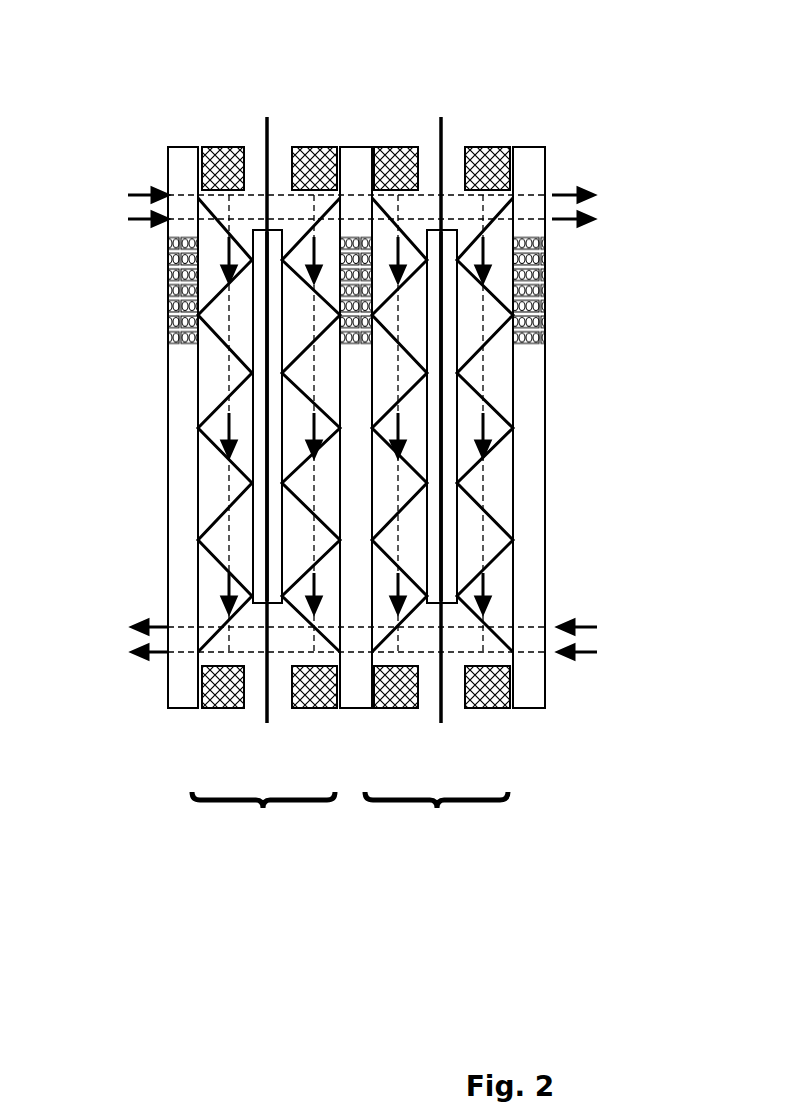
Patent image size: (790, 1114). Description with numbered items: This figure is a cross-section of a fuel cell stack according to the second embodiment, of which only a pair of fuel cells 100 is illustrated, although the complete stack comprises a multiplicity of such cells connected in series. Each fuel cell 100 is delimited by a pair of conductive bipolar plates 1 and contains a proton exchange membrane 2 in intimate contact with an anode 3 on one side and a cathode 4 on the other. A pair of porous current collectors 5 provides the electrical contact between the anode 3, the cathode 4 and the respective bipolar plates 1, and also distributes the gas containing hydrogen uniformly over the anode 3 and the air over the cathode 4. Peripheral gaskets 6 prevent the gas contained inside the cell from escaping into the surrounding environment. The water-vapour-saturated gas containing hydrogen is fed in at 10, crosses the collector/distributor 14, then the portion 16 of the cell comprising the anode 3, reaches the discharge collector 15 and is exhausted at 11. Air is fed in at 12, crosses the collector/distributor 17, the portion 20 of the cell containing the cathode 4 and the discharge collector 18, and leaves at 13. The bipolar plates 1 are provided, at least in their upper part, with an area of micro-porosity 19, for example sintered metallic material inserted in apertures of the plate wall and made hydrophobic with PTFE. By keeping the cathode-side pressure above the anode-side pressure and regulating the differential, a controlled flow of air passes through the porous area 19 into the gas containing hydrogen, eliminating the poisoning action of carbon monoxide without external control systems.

The bipolar plates 1 is at (187, 152).
The proton exchange membrane 2 is at (272, 127).
The anode 3 is at (257, 561).
The cathode 4 is at (275, 409).
The porous current collectors 5 is at (215, 336).
The peripheral gaskets 6 is at (225, 710).
The hydrogen gas feed 10 is at (147, 221).
The exhaust hydrogen gas discharge 11 is at (143, 622).
The air feed 12 is at (148, 190).
The air discharge 13 is at (142, 655).
The collector/distributor for gas containing hydrogen 14 is at (560, 224).
The discharge collector for gas containing hydrogen 15 is at (585, 623).
The portion of the cell comprising the anode 16 is at (229, 483).
The collector/distributor for air 17 is at (570, 190).
The discharge collector for air 18 is at (585, 657).
The micro-porosity area 19 is at (168, 292).
The portion of the cell containing the cathode 20 is at (313, 503).
The fuel cell 100 is at (350, 820).